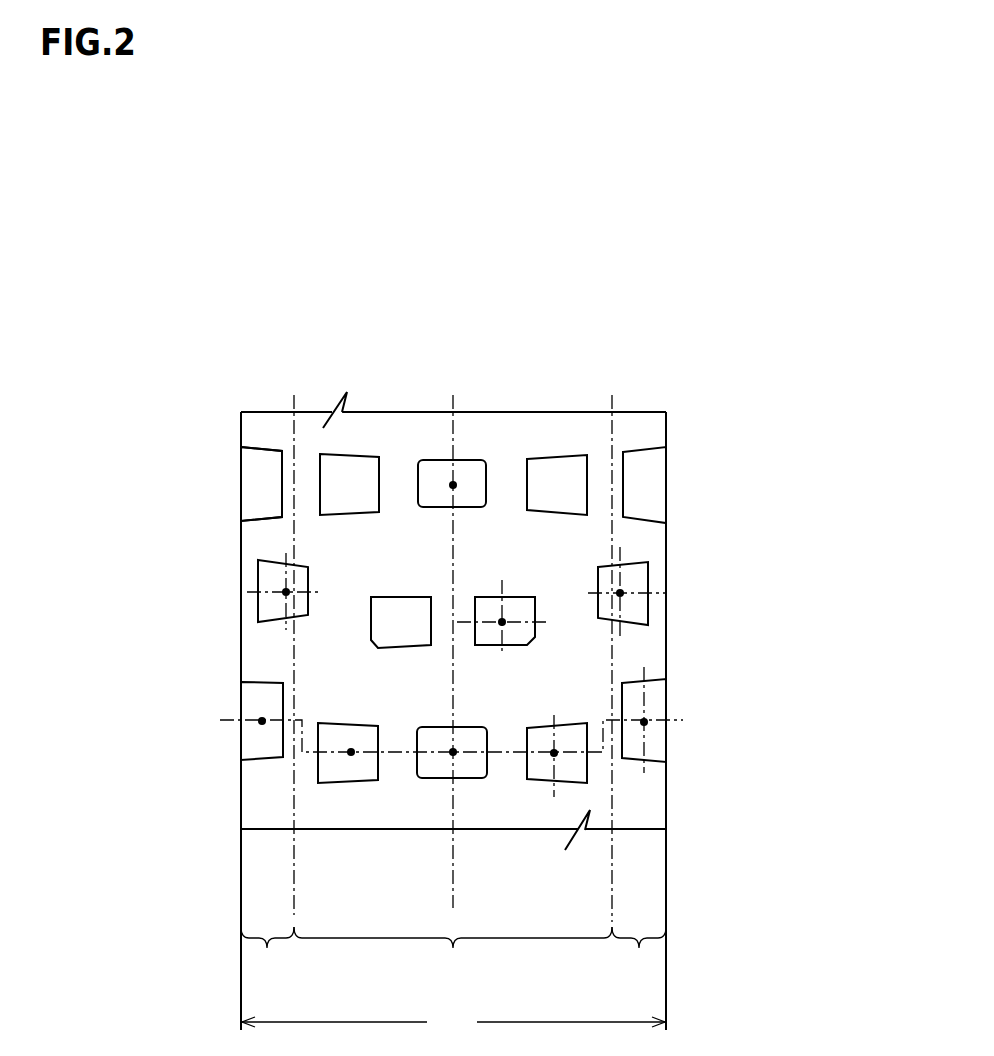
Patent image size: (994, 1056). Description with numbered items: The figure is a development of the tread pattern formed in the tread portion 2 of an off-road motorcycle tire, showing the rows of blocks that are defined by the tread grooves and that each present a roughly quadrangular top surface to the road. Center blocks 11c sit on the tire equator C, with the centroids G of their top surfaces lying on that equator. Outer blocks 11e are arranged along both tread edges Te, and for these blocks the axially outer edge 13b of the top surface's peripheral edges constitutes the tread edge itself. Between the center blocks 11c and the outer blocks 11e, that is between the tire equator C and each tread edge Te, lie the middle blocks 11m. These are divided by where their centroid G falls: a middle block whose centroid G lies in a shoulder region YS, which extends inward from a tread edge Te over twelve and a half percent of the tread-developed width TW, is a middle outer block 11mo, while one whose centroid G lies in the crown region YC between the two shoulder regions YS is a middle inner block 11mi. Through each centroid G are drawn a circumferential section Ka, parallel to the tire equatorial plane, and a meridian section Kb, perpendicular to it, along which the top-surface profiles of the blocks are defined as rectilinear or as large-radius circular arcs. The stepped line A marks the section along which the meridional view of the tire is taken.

The tread portion 2 is at (587, 362).
The axially outer edge 13b is at (242, 522).
The tread edge Te is at (242, 458).
The outer block 11e is at (255, 485).
The middle inner block 11mi is at (348, 453).
The middle block 11m is at (404, 597).
The center block 11c is at (468, 460).
The middle outer block 11mo is at (258, 577).
The tire equator C is at (452, 879).
The circumferential section Ka is at (620, 558).
The meridian section Kb is at (657, 593).
The line A- A is at (454, 729).
The centroid G is at (286, 592).
The shoulder region YS is at (453, 955).
The crown region YC is at (453, 955).
The tread-developed width TW is at (453, 1023).